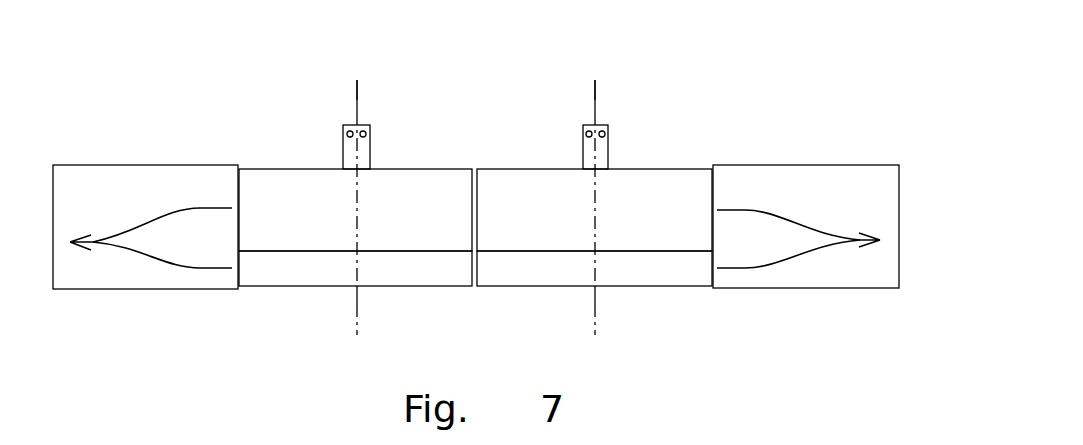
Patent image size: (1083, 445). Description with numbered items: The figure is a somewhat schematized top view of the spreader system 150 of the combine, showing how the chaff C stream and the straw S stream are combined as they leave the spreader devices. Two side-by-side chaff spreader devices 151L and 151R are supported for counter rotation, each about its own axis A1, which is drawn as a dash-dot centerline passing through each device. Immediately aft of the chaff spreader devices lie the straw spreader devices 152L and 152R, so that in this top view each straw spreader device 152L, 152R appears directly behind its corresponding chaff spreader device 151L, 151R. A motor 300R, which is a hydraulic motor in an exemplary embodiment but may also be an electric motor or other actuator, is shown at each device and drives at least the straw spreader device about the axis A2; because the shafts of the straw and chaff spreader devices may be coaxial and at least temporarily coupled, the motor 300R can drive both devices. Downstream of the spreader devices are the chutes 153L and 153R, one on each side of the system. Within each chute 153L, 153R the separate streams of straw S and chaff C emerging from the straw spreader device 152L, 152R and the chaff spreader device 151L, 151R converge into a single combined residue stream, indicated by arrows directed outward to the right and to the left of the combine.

The spreader assembly 150 is at (693, 100).
The chaff spreader device 151R is at (300, 287).
The chaff spreader device 151L is at (558, 287).
The straw spreader device 152R is at (402, 169).
The straw spreader device 152L is at (563, 169).
The chute 153R is at (140, 165).
The chute 153L is at (806, 165).
The motor 300R is at (343, 149).
The axis A1 is at (357, 308).
The axis A2 is at (355, 112).
The straw S is at (200, 207).
The chaff C is at (178, 265).